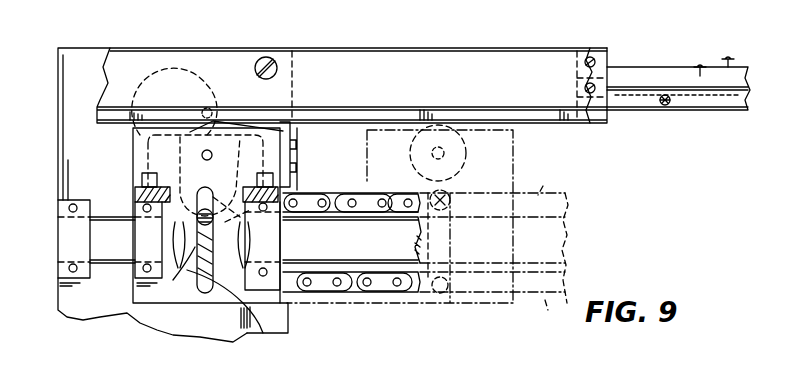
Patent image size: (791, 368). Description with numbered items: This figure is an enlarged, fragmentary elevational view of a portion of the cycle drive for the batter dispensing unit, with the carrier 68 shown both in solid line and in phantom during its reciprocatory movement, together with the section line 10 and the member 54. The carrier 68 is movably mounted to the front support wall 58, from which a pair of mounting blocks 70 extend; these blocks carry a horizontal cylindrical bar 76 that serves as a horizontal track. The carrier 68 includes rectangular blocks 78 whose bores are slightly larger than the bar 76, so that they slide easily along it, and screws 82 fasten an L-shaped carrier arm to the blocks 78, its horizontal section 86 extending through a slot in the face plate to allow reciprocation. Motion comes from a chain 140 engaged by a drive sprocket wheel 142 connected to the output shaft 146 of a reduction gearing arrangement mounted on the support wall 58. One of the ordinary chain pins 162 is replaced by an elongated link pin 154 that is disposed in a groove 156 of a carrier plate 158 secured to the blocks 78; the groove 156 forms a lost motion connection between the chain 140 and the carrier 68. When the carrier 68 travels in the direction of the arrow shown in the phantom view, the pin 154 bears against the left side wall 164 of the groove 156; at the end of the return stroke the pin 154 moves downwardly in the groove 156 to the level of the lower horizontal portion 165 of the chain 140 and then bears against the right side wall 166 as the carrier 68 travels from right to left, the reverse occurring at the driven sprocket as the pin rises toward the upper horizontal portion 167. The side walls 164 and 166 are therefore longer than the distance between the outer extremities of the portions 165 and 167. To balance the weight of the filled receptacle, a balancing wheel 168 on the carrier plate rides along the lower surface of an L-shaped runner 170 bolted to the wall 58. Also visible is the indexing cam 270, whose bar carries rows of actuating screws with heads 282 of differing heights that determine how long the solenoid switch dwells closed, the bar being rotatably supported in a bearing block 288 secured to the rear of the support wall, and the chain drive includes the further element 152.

The section line 10 is at (197, 315).
The frame member 54 is at (150, 112).
The front support wall 58 is at (70, 176).
The carrier 68 is at (122, 161).
The mounting blocks 70 is at (60, 240).
The horizontal cylindrical bar 76 is at (564, 243).
The rectangular blocks 78 is at (275, 243).
The screws 82 is at (133, 178).
The horizontal section 86 is at (258, 186).
The chain 140 is at (312, 193).
The drive sprocket wheel 142 is at (270, 306).
The output shaft 146 is at (205, 266).
The lower chain 152 is at (380, 290).
The elongated link pin 154 is at (452, 192).
The groove 156 is at (443, 292).
The carrier plate 158 is at (270, 137).
The pins 162 is at (367, 193).
The left side wall 164 is at (417, 233).
The lower horizontal portion 165 is at (545, 300).
The right side wall 166 is at (275, 340).
The upper horizontal portion 167 is at (548, 186).
The balancing wheel 168 is at (185, 115).
The runner 170 is at (373, 147).
The indexing cam 270 is at (695, 38).
The screw heads 282 is at (668, 107).
The bearing block 288 is at (608, 50).